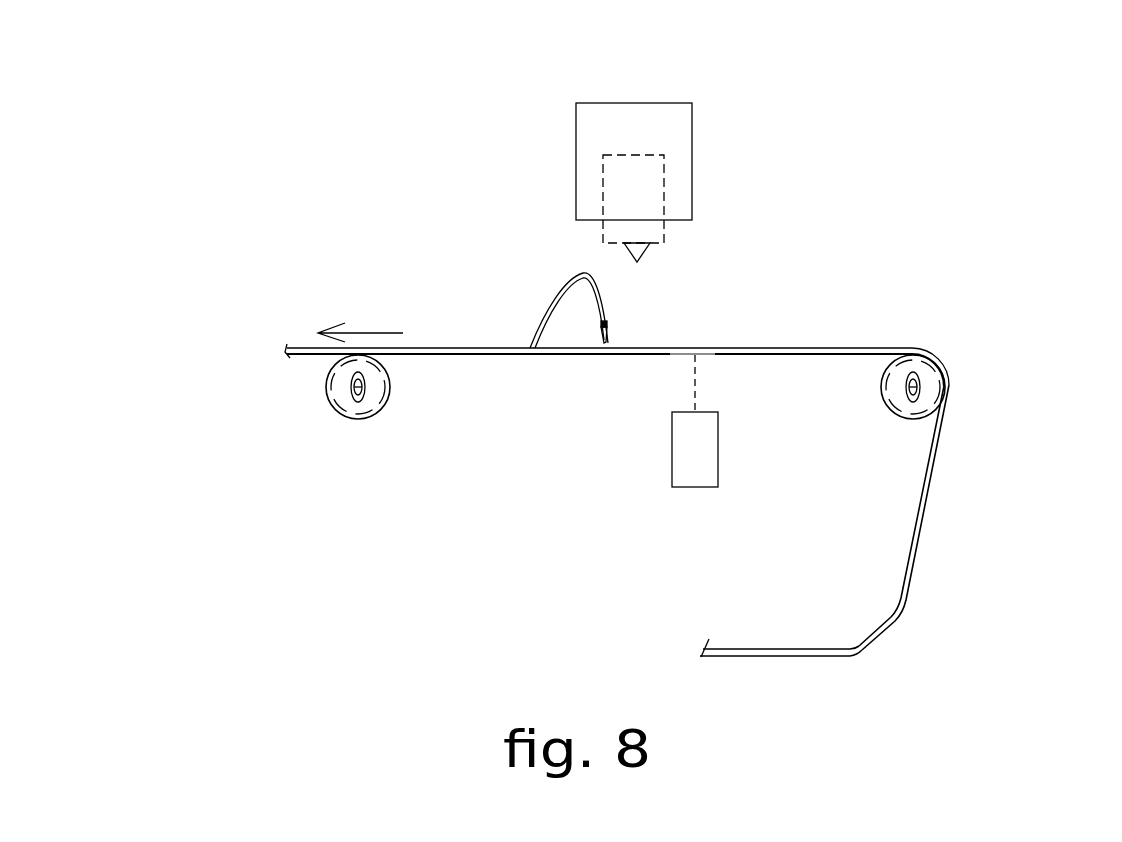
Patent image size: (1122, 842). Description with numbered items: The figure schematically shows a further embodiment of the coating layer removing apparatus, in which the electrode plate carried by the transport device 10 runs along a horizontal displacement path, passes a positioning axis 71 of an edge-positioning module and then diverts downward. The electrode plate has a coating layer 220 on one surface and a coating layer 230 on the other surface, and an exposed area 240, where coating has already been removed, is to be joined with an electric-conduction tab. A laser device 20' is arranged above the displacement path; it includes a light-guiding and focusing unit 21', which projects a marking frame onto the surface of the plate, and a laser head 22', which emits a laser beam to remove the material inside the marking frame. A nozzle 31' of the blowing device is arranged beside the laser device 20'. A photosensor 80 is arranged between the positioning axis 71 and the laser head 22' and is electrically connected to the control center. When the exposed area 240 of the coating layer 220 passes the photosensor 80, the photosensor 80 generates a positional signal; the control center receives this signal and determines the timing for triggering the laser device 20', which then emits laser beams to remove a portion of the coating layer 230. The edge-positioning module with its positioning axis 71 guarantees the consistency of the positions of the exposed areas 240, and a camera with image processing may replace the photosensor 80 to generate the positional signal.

The transport device 10 is at (139, 206).
The laser device 20' is at (532, 131).
The light-guiding and focusing unit 21' is at (724, 164).
The laser head 22' is at (737, 212).
The nozzle 31' is at (489, 280).
The positioning axis 71 is at (330, 405).
The photosensor 80 is at (682, 458).
The coating layer 220 is at (762, 648).
The coating layer 230 is at (933, 482).
The exposed area 240 is at (913, 523).